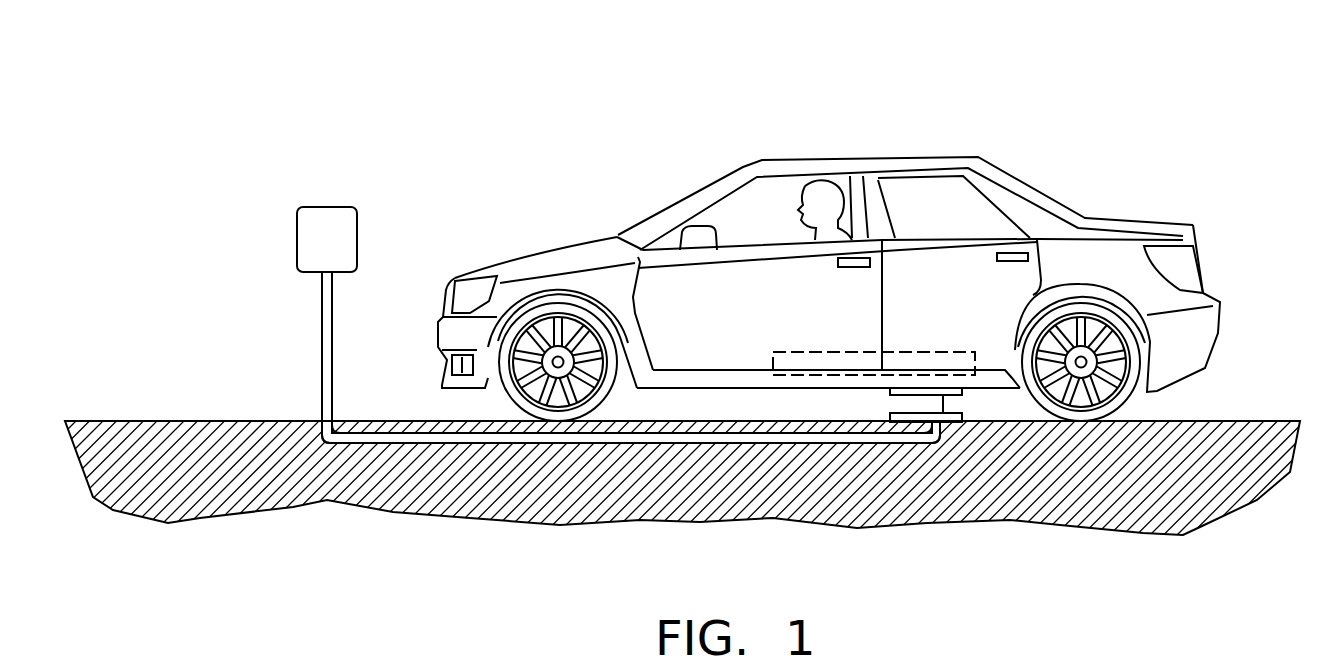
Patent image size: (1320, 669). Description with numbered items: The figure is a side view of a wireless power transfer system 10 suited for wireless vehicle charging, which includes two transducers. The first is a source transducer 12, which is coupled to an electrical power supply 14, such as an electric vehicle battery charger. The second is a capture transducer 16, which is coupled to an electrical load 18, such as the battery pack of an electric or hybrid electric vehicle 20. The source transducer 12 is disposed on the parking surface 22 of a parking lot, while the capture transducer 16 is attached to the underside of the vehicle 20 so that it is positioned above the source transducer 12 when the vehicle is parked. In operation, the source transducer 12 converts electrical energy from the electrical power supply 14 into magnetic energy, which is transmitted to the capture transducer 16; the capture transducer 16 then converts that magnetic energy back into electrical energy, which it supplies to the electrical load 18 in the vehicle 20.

The wireless power transfer system 10 is at (829, 307).
The source transducer 12 is at (917, 421).
The electrical power supply 14 is at (302, 238).
The capture transducer 16 is at (943, 413).
The electrical load 18 is at (838, 376).
The vehicle 20 is at (1005, 170).
The parking surface 22 is at (185, 420).